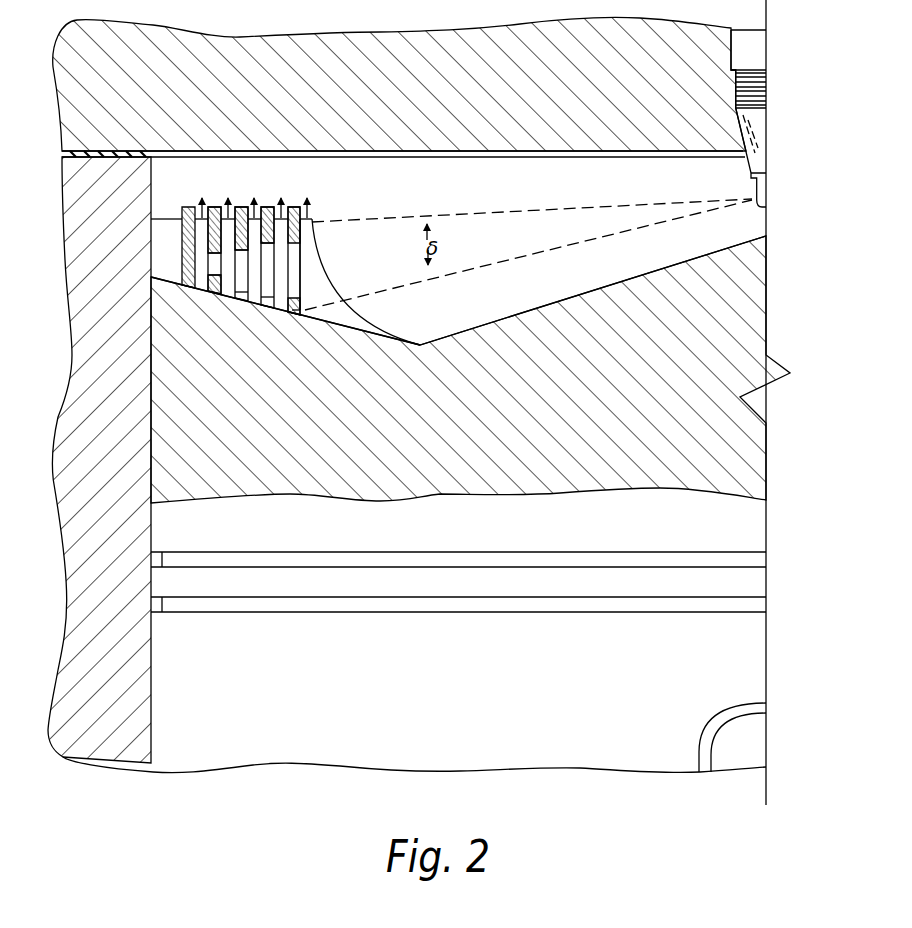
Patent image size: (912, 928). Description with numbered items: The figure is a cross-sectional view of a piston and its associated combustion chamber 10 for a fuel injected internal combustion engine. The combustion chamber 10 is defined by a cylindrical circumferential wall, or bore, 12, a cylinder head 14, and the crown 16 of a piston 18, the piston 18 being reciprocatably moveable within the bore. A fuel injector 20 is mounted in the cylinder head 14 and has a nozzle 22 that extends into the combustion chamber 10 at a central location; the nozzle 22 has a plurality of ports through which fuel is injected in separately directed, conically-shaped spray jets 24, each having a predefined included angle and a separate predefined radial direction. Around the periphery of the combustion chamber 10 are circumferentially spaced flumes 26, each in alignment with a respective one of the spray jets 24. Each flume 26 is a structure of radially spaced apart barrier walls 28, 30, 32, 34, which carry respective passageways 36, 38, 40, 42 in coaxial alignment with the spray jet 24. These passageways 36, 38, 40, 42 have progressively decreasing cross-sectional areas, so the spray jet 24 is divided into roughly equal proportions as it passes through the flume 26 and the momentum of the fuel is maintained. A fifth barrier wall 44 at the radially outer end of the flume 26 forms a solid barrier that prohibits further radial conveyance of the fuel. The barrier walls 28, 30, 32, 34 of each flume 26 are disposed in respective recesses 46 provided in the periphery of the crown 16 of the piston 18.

The combustion chamber 10 is at (562, 183).
The cylindrical circumferential wall 12 is at (150, 198).
The cylinder head 14 is at (432, 108).
The crown 16 is at (428, 343).
The piston 18 is at (432, 426).
The fuel injector 20 is at (758, 135).
The nozzle 22 is at (762, 201).
The spray jets 24 is at (492, 212).
The flumes 26 is at (316, 208).
The barrier wall 28 is at (292, 206).
The barrier wall 30 is at (265, 206).
The barrier wall 32 is at (241, 206).
The barrier wall 34 is at (219, 206).
The passageway 36 is at (297, 245).
The passageway 38 is at (265, 294).
The passageway 40 is at (243, 283).
The passageway 42 is at (212, 268).
The fifth barrier wall 44 is at (190, 207).
The recesses 46 is at (345, 326).